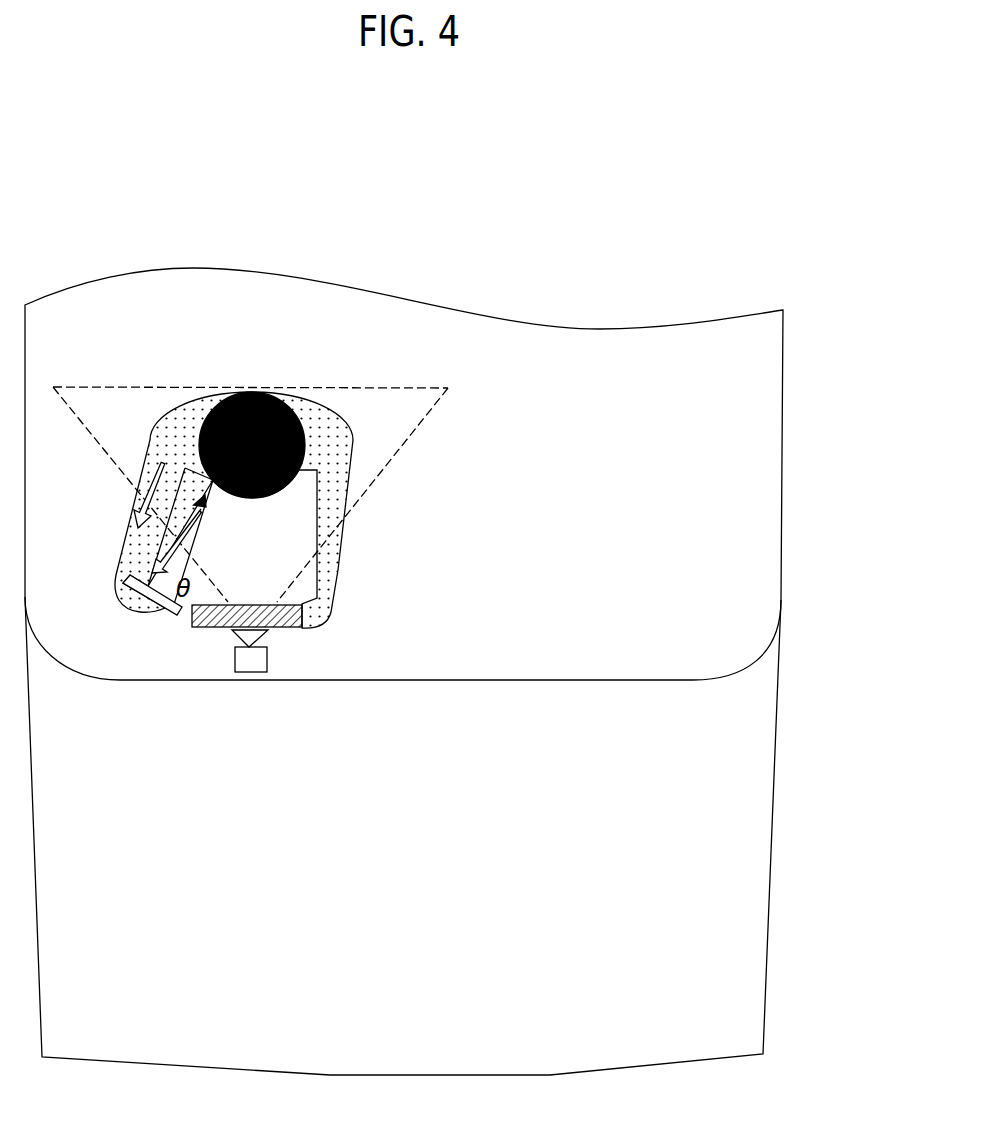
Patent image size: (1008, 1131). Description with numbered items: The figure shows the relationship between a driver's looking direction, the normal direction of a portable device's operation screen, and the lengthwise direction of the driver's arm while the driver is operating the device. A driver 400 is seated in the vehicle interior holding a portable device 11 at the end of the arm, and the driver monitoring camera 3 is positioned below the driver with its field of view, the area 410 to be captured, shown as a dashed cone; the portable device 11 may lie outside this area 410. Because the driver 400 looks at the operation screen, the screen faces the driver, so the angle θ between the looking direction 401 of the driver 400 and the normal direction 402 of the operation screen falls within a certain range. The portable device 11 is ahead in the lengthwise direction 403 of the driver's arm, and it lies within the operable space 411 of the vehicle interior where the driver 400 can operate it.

The driver 400 is at (348, 422).
The looking direction 401 is at (172, 556).
The normal direction of the operation screen 402 is at (172, 530).
The lengthwise direction of the arm 403 is at (160, 470).
The area to be captured 410 is at (402, 445).
The operable space 411 is at (765, 487).
The portable device 11 is at (160, 613).
The driver monitoring camera 3 is at (268, 658).